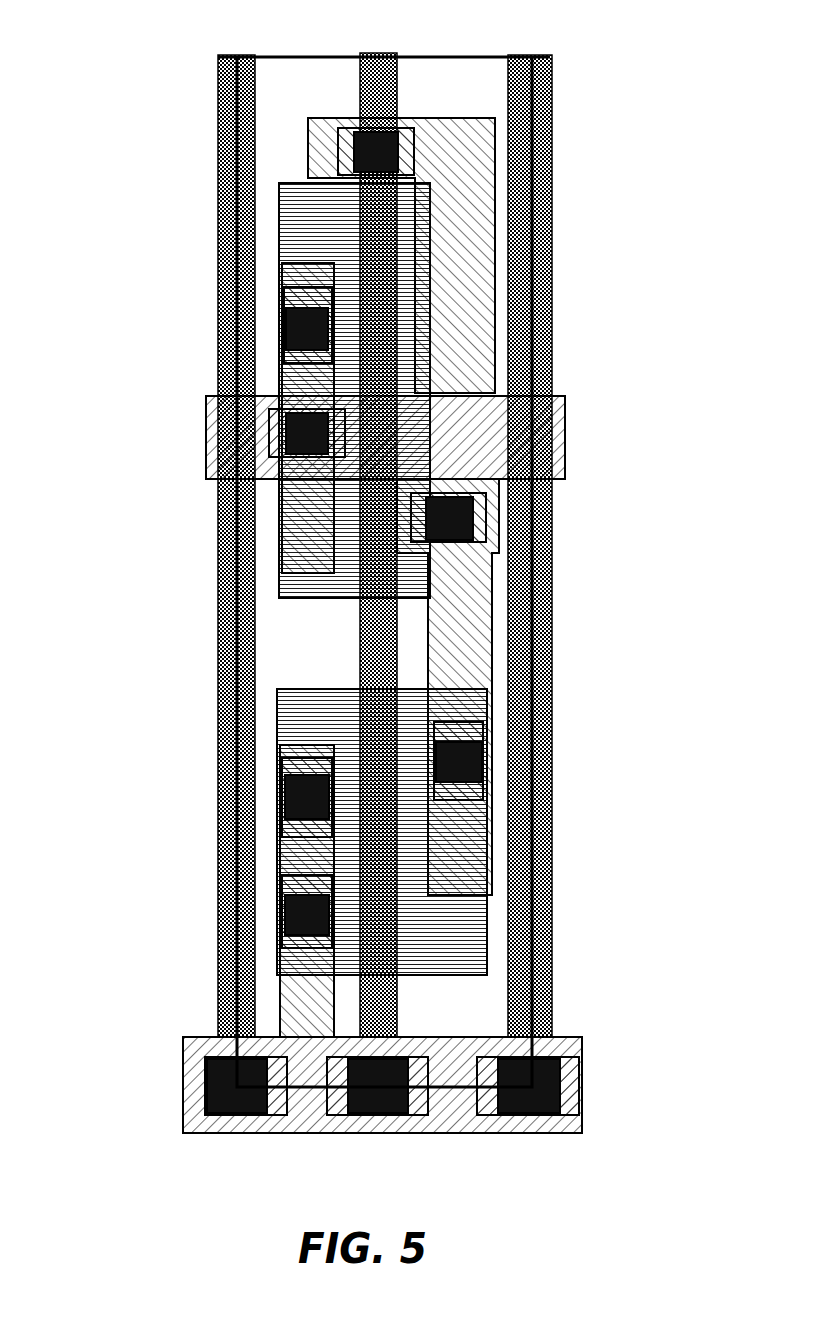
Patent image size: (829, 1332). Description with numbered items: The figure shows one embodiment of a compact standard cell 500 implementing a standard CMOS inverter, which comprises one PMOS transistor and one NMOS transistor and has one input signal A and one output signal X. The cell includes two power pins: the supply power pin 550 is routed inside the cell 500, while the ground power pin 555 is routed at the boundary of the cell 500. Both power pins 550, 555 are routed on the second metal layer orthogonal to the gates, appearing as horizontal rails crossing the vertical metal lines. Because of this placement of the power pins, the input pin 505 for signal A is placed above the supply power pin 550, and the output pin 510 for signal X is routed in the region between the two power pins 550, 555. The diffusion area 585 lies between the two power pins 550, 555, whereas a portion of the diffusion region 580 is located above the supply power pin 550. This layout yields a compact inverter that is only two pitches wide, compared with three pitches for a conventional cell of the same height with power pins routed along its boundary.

The compact standard cell 500 is at (285, 57).
The input pin 505 is at (485, 163).
The output pin 510 is at (486, 633).
The VDD pin 550 is at (562, 438).
The VSS pin 555 is at (585, 1092).
The diffusion region 580 is at (297, 248).
The diffusion area 585 is at (307, 707).